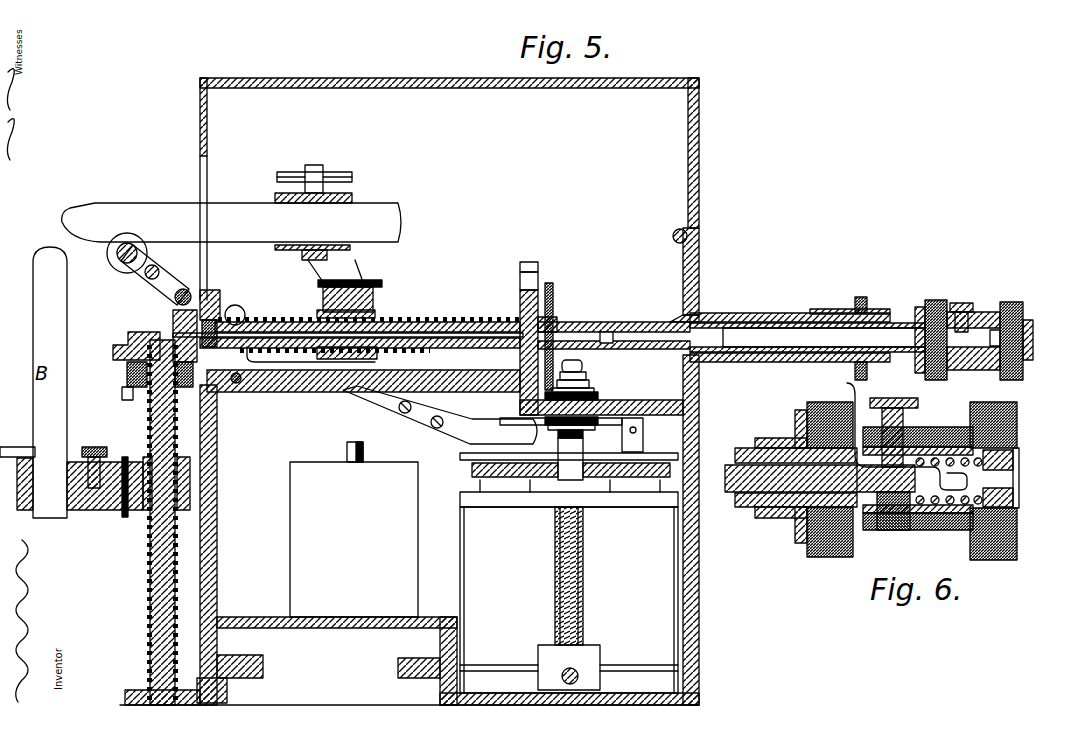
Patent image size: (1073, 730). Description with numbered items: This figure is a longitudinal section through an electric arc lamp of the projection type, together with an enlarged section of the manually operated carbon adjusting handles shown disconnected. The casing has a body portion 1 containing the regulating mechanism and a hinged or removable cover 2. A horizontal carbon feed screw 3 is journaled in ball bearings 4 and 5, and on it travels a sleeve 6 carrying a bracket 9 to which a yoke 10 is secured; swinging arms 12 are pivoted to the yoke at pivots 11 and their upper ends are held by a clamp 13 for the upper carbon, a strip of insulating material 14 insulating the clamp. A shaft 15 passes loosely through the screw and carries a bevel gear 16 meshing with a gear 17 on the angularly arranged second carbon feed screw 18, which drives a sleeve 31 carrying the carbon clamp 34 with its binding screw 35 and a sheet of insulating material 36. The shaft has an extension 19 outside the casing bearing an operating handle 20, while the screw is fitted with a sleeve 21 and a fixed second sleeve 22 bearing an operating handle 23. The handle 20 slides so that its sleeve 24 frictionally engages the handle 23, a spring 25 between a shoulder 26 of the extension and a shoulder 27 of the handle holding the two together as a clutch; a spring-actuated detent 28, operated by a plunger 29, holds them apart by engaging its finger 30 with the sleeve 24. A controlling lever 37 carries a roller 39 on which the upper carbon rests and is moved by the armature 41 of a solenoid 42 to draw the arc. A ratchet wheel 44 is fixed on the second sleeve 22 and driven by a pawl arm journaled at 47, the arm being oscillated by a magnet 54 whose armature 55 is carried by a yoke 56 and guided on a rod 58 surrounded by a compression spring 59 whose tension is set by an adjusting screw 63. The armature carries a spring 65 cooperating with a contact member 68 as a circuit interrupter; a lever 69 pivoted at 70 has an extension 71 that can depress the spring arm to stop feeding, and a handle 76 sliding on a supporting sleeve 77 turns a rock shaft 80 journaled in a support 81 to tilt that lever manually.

In FIG. 5, the body portion 1 is at (696, 616).
In FIG. 5, the cover 2 is at (692, 158).
In FIG. 5, the carbon feed screw 3 is at (428, 320).
In FIG. 5, the ball bearing 4 is at (222, 318).
In FIG. 5, the ball bearing 5 is at (520, 320).
In FIG. 5, the sleeve 6 is at (375, 313).
In FIG. 5, the bracket 9 is at (323, 300).
In FIG. 5, the yoke 10 is at (322, 278).
In FIG. 5, the pivots 11 is at (231, 222).
In FIG. 5, the swinging arms 12 is at (344, 263).
In FIG. 5, the clamp 13 is at (352, 198).
In FIG. 5, the strip of insulating material 14 is at (380, 283).
In FIG. 5, the shaft 15 is at (453, 340).
In FIG. 5, the bevel gear 16 is at (173, 316).
In FIG. 5, the bevel gear 17 is at (140, 356).
In FIG. 5, the second carbon feed screw 18 is at (152, 565).
In FIG. 5, the extension 19 is at (760, 340).
In FIG. 6, the extension 19 is at (752, 480).
In FIG. 5, the operating handle 20 is at (1012, 302).
In FIG. 6, the operating handle 20 is at (1016, 430).
In FIG. 5, the sleeve 21 is at (602, 323).
In FIG. 5, the second sleeve 22 is at (640, 341).
In FIG. 6, the second sleeve 22 is at (786, 500).
In FIG. 5, the operating handle 23 is at (938, 300).
In FIG. 6, the operating handle 23 is at (830, 556).
In FIG. 6, the sleeve 24 is at (935, 422).
In FIG. 6, the spring 25 is at (955, 458).
In FIG. 6, the shoulder 26 is at (1013, 460).
In FIG. 6, the shoulder 27 is at (930, 530).
In FIG. 6, the spring-actuated detent 28 is at (902, 520).
In FIG. 5, the plunger 29 is at (968, 305).
In FIG. 6, the plunger 29 is at (893, 398).
In FIG. 6, the finger 30 is at (892, 432).
In FIG. 5, the sleeve 31 is at (148, 512).
In FIG. 5, the carbon clamp 34 is at (25, 447).
In FIG. 5, the binding screw 35 is at (93, 450).
In FIG. 5, the sheet of insulating material 36 is at (126, 458).
In FIG. 5, the controlling lever 37 is at (160, 282).
In FIG. 5, the roller 39 is at (124, 260).
In FIG. 5, the armature 41 is at (347, 456).
In FIG. 5, the solenoid 42 is at (354, 539).
In FIG. 5, the ratchet wheel 44 is at (553, 292).
In FIG. 5, the journal 47 is at (557, 320).
In FIG. 5, the magnet 54 is at (569, 600).
In FIG. 5, the armature 55 is at (524, 470).
In FIG. 5, the yoke 56 is at (614, 415).
In FIG. 5, the guiding rod 58 is at (555, 565).
In FIG. 5, the compression spring 59 is at (584, 578).
In FIG. 5, the adjusting screw 63 is at (580, 677).
In FIG. 5, the spring 65 is at (571, 455).
In FIG. 5, the contact member 68 is at (584, 366).
In FIG. 5, the lever 69 is at (420, 420).
In FIG. 5, the pivot 70 is at (358, 396).
In FIG. 5, the extension 71 is at (585, 472).
In FIG. 5, the handle 76 is at (861, 297).
In FIG. 5, the supporting sleeve 77 is at (733, 314).
In FIG. 5, the rock shaft 80 is at (236, 384).
In FIG. 5, the support 81 is at (313, 386).